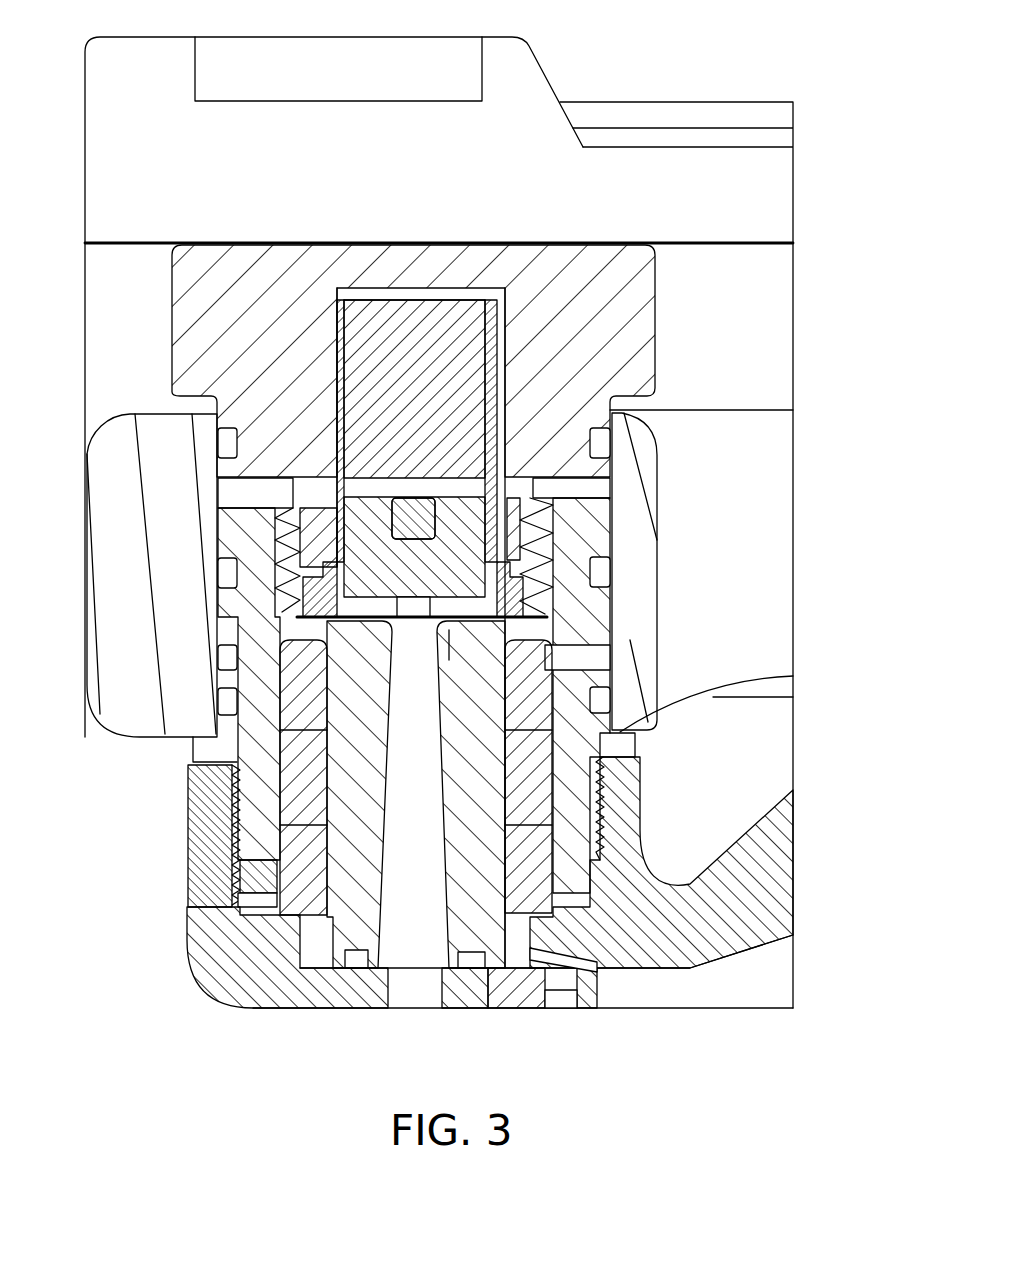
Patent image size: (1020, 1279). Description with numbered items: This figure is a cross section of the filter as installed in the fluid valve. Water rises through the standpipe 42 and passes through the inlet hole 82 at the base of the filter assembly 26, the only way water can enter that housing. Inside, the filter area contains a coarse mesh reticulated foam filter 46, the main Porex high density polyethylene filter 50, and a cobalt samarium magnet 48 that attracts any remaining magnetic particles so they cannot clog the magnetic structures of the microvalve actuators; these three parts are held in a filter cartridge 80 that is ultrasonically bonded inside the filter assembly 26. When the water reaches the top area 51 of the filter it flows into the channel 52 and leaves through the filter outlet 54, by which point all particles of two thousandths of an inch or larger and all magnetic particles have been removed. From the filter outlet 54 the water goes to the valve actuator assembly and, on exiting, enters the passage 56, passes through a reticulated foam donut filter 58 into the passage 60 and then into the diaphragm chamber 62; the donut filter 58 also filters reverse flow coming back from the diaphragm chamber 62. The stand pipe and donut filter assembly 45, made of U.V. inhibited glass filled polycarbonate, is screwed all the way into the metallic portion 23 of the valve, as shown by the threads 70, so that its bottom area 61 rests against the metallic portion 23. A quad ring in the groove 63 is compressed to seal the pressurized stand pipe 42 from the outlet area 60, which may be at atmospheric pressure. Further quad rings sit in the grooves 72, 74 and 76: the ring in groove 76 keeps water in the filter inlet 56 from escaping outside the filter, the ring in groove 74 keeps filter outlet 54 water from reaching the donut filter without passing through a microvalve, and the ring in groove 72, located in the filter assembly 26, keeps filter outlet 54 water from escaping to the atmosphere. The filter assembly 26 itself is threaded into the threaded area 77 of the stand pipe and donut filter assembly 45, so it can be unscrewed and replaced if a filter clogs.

The metallic portion 23 is at (231, 967).
The filter assembly 26 is at (237, 262).
The standpipe 42 is at (426, 903).
The stand pipe and donut filter assembly 45 is at (260, 855).
The filter 46 is at (310, 522).
The magnet 48 is at (420, 495).
The filter 50 is at (362, 358).
The top area 51 is at (492, 298).
The channel 52 is at (468, 290).
The filter outlet 54 is at (590, 500).
The passage 56 is at (592, 653).
The donut filter 58 is at (300, 795).
The passage 60 is at (562, 1005).
The bottom area 61 is at (488, 1005).
The diaphragm chamber 62 is at (717, 997).
The groove 63 is at (352, 1005).
The threads 70 is at (228, 787).
The groove 72 is at (223, 445).
The groove 74 is at (220, 574).
The groove 76 is at (172, 737).
The threaded area 77 is at (330, 595).
The filter cartridge 80 is at (473, 622).
The inlet hole 82 is at (425, 620).